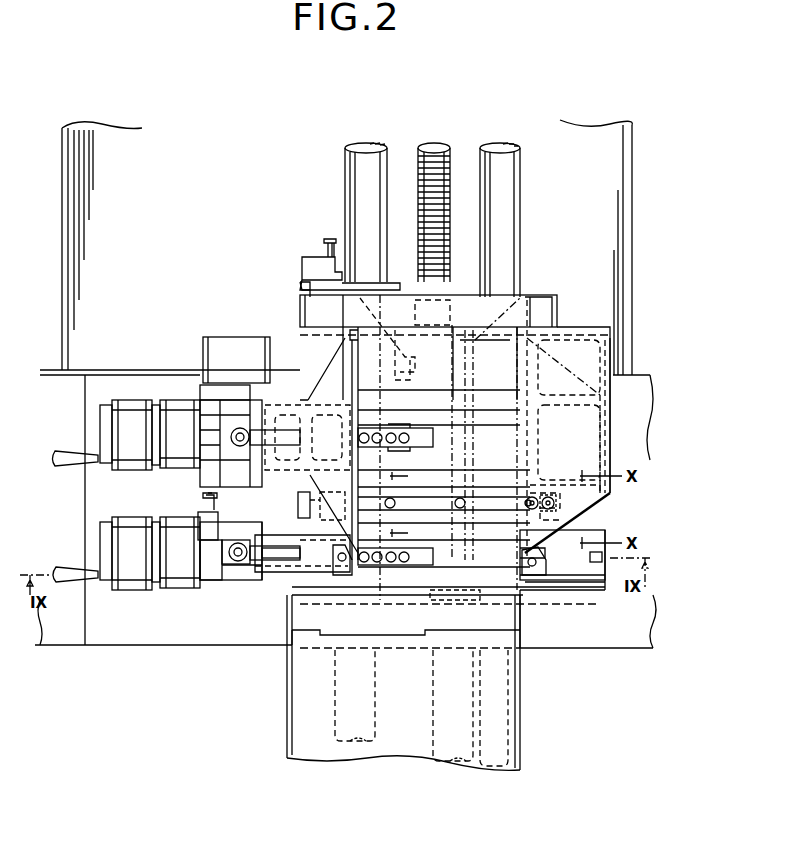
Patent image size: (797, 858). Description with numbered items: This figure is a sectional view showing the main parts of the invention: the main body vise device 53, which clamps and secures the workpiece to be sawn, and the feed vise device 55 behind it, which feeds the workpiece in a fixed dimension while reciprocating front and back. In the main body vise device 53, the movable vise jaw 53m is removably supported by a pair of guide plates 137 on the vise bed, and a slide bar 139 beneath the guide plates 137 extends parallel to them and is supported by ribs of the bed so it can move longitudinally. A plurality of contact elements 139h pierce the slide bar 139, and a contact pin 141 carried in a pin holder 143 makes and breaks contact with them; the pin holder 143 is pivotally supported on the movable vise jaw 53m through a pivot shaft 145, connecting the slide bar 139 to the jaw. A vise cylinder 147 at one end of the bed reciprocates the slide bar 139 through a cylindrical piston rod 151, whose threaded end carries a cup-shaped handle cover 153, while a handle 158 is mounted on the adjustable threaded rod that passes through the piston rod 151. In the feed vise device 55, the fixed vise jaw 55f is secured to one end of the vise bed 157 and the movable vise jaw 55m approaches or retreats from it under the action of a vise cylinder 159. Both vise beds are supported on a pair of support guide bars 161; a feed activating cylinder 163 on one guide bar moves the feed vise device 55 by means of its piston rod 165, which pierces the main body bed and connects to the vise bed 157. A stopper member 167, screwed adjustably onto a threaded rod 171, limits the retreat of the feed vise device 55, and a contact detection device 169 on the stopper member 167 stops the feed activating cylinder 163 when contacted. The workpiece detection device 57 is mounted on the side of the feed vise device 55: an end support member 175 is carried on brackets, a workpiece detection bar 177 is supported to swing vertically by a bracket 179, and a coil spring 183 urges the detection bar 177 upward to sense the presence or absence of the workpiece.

The threaded rod 171 is at (432, 148).
The support guide bars 161 is at (355, 166).
The stopper member 167 is at (316, 256).
The contact detection device 169 is at (302, 268).
The piston rod 165 is at (523, 297).
The feed vise device 55 is at (582, 308).
The movable vise jaw 55m is at (330, 380).
The fixed vise jaw 55f is at (530, 385).
The workpiece detection device 57 is at (498, 488).
The coil spring 183 is at (538, 470).
The bracket 179 is at (290, 498).
The end support member 175 is at (298, 512).
The vise cylinder 159 is at (172, 386).
The handle 158 is at (67, 567).
The vise bed 157 is at (620, 503).
The handle cover 153 is at (125, 592).
The vise cylinder 147 is at (172, 592).
The piston rod 151 is at (210, 580).
The contact pin 141 is at (232, 565).
The pin holder 143 is at (262, 580).
The pivot shaft 145 is at (292, 562).
The movable vise jaw 53m is at (300, 592).
The slide bar 139 is at (370, 565).
The contact elements 139h is at (405, 565).
The workpiece detection bar 177 is at (455, 580).
The guide plates 137 is at (526, 595).
The main body vise device 53 is at (580, 590).
The feed activating cylinder 163 is at (432, 728).